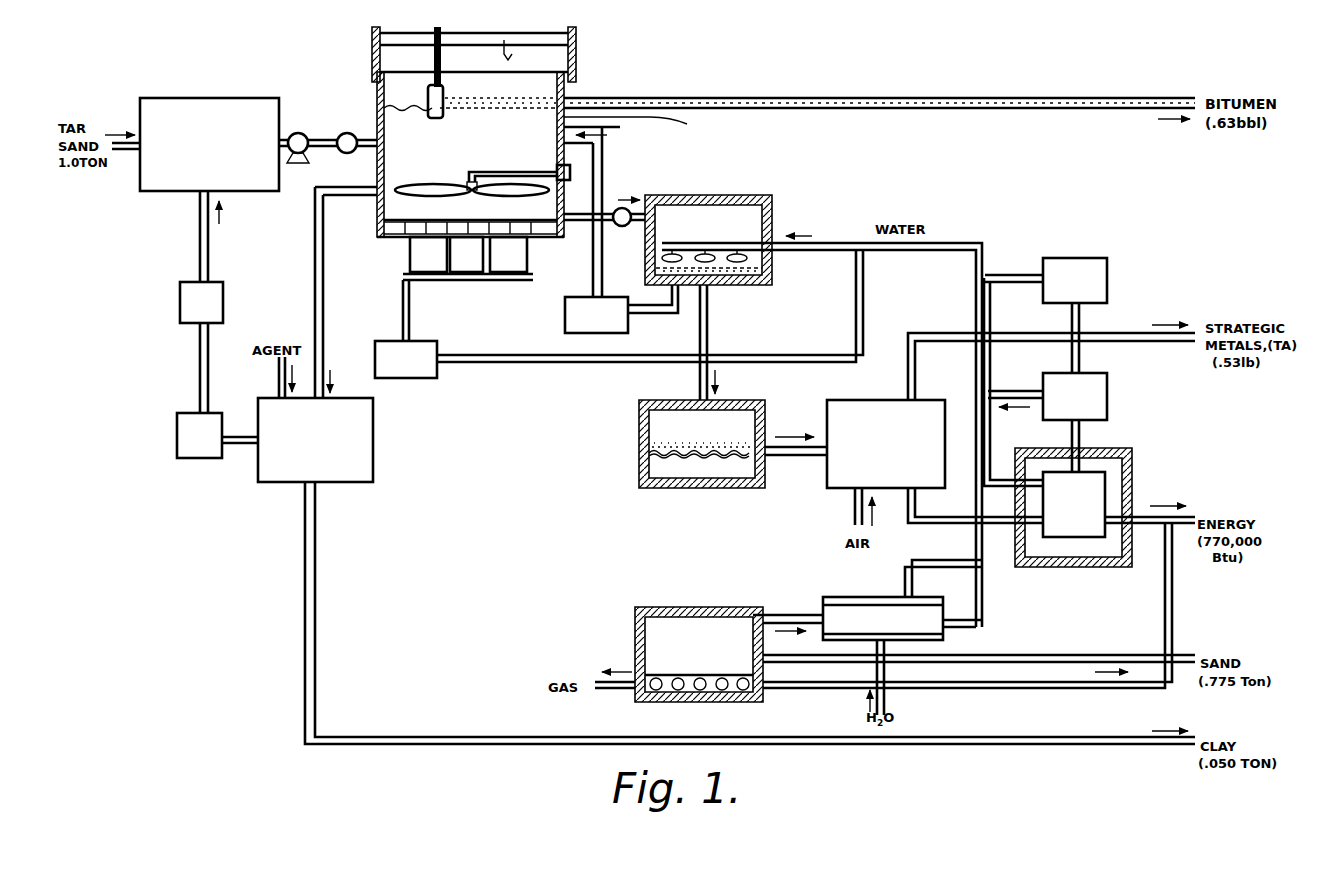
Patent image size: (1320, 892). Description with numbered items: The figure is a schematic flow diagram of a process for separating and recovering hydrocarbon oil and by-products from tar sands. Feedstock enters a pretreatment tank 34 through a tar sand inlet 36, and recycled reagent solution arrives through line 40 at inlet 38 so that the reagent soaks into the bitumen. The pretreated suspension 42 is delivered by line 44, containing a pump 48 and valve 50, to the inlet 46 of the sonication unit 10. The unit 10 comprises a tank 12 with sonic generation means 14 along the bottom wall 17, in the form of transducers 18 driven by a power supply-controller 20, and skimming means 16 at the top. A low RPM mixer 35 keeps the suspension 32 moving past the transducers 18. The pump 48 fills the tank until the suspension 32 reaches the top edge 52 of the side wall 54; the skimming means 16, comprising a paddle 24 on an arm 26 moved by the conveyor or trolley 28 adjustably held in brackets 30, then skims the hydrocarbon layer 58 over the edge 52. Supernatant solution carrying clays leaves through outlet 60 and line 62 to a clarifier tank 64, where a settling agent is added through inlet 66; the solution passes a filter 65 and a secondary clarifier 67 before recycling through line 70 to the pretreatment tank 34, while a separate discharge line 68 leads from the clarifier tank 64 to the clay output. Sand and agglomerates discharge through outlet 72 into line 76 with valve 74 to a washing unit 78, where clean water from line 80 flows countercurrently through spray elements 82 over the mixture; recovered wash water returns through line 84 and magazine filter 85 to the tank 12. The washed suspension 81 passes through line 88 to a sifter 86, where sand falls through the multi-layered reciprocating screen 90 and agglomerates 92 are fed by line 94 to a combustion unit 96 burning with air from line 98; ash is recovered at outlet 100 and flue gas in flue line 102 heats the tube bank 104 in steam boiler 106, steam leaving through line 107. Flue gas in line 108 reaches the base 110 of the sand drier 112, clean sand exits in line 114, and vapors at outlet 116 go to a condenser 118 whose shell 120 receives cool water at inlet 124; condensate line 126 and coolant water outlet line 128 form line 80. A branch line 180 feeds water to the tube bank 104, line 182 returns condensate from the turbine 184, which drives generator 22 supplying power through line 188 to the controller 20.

The sonication unit 10 is at (586, 82).
The tank 12 is at (378, 105).
The sonic generation means 14 is at (377, 232).
The skimming means 16 is at (538, 26).
The bottom wall 17 is at (392, 243).
The transducers 18 is at (425, 222).
The power supply-controller 20 is at (384, 345).
The generator 22 is at (1070, 258).
The paddle 24 is at (432, 90).
The arm 26 is at (431, 60).
The conveyor or trolley 28 is at (520, 53).
The brackets 30 is at (372, 40).
The suspension 32 is at (879, 117).
The pretreatment tank 34 is at (210, 100).
The low RPM mixer 35 is at (440, 185).
The tar sand inlet 36 is at (140, 158).
The inlet 38 is at (200, 193).
The line 40 is at (209, 240).
The pretreated suspension 42 is at (157, 178).
The line 44 is at (328, 157).
The inlet 46 is at (368, 152).
The pump 48 is at (306, 133).
The valve 50 is at (357, 112).
The top edge 52 is at (551, 100).
The side wall 54 is at (604, 133).
The hydrocarbon layer 58 is at (495, 100).
The outlet 60 is at (376, 193).
The line 62 is at (315, 310).
The clarifier tank 64 is at (375, 428).
The filter 65 is at (185, 430).
The inlet 66 is at (279, 374).
The secondary clarifier 67 is at (183, 305).
The clay discharge pipe 68 is at (305, 552).
The line 70 is at (235, 448).
The outlet 72 is at (590, 238).
The valve 74 is at (614, 236).
The line 76 is at (612, 208).
The washing unit 78 is at (738, 196).
The line 80 is at (970, 240).
The washed suspension 81 is at (750, 286).
The spray nozzles 82 is at (770, 258).
The line 84 is at (675, 318).
The magazine filter 85 is at (565, 315).
The sifter 86 is at (645, 420).
The line 88 is at (708, 326).
The multi-layered reciprocating screen 90 is at (660, 457).
The agglomerates 92 is at (650, 450).
The line 94 is at (805, 460).
The combustion unit 96 is at (848, 400).
The line 98 is at (855, 500).
The outlet 100 is at (908, 398).
The flue line 102 is at (938, 525).
The tube bank 104 is at (1093, 508).
The steam boiler 106 is at (1132, 472).
The line 107 is at (1080, 440).
The line 108 is at (1172, 608).
The base 110 is at (748, 695).
The sand drier 112 is at (637, 620).
The line 114 is at (1118, 652).
The outlet 116 is at (783, 612).
The condenser 118 is at (838, 597).
The shell 120 is at (945, 636).
The inlet 124 is at (887, 692).
The condensate line 126 is at (905, 572).
The coolant water outlet line 128 is at (984, 600).
The branch line 180 is at (998, 478).
The line 182 is at (1003, 388).
The turbine 184 is at (1107, 395).
The line 188 is at (527, 362).